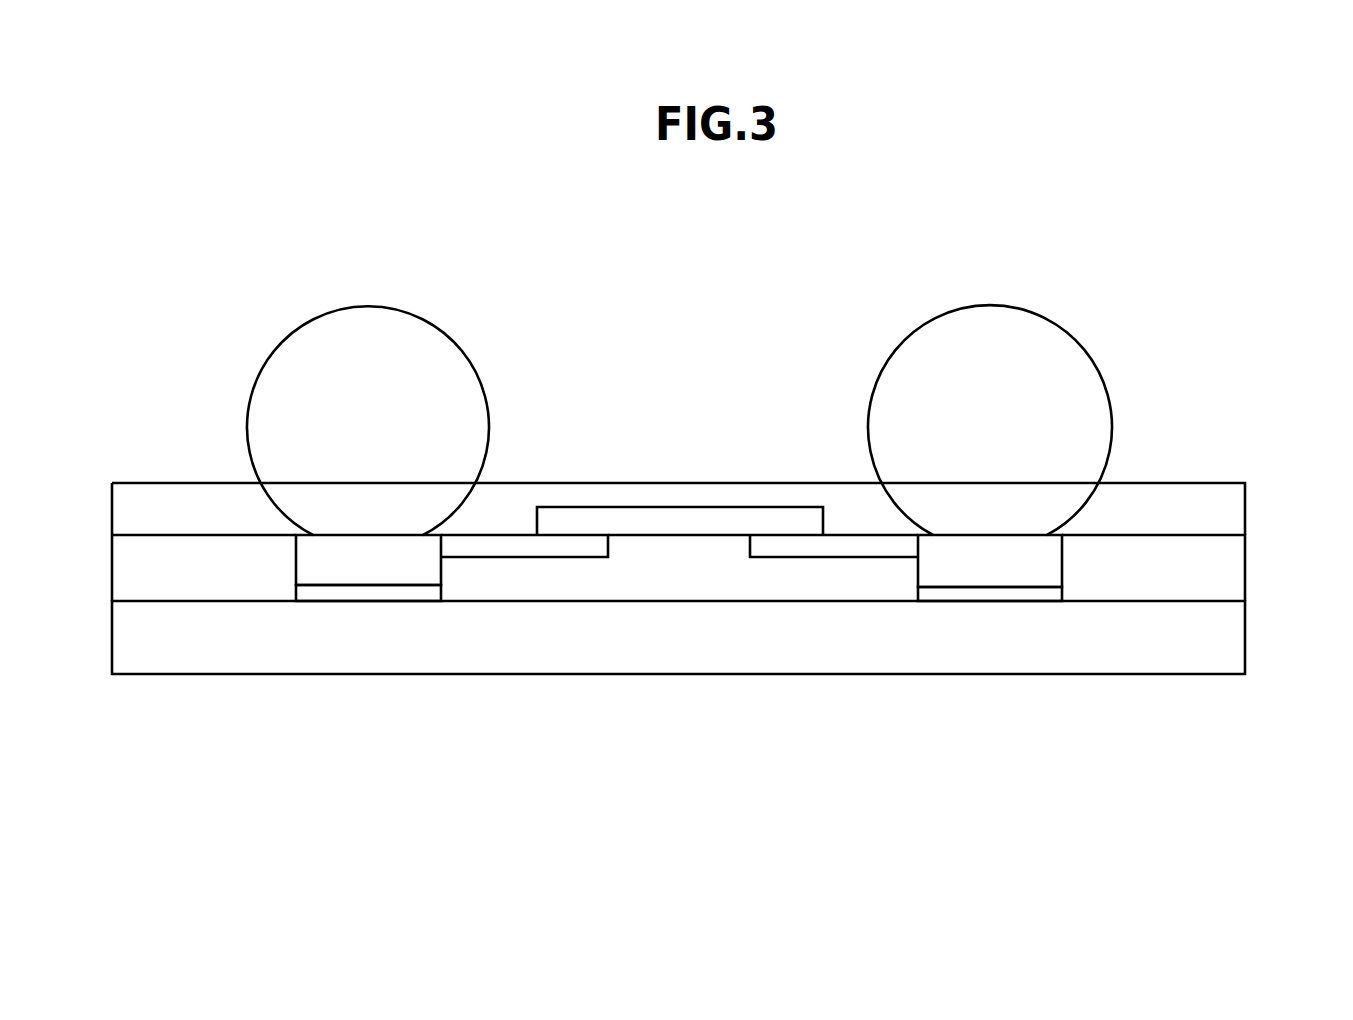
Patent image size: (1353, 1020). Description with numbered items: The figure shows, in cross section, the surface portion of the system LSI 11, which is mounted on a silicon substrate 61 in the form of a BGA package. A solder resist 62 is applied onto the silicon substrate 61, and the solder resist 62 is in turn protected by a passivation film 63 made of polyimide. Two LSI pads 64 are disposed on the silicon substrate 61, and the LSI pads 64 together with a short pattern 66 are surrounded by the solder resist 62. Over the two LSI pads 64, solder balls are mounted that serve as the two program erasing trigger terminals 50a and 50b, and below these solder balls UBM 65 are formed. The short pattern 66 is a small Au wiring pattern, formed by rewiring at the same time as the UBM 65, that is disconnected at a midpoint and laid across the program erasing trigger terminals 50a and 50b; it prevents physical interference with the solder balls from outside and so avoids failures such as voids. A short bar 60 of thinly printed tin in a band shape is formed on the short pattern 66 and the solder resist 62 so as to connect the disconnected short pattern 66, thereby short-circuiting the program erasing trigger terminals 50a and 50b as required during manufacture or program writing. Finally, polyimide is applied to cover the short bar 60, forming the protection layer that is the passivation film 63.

The system LSI 11 is at (1184, 275).
The program erasing trigger terminal 50a is at (368, 330).
The program erasing trigger terminal 50b is at (988, 333).
The short bar 60 is at (672, 518).
The silicon substrate 61 is at (1220, 640).
The solder resist 62 is at (1220, 568).
The passivation film 63 is at (1220, 508).
The LSI pad 64 is at (367, 592).
The UBM (Under Bump Metal) 65 is at (428, 570).
The short pattern 66 is at (510, 547).